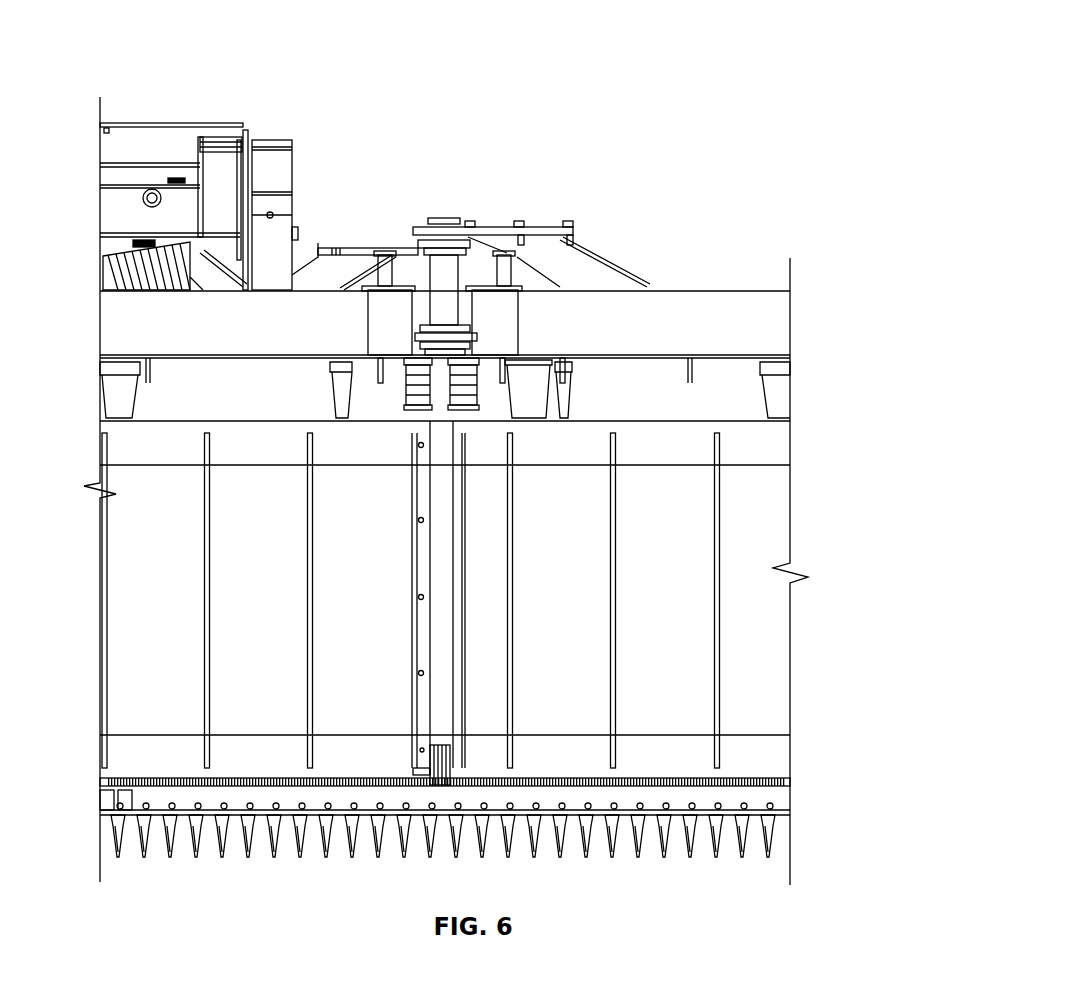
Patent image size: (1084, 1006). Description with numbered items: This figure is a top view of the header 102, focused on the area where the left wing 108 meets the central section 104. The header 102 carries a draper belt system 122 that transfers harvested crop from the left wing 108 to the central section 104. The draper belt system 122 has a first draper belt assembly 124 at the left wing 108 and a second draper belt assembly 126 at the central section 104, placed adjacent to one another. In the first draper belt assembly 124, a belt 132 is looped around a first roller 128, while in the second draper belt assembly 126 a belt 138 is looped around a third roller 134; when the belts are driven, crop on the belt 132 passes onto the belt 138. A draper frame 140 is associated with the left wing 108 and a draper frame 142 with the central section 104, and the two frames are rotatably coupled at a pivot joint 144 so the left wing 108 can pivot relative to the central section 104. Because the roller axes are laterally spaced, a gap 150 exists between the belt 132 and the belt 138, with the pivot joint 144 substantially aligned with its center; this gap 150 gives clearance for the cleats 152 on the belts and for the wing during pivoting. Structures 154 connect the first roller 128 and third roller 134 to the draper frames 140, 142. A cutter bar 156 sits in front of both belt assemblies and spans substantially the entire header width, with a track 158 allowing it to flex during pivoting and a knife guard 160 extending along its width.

The header 102 is at (665, 35).
The central section 104 is at (150, 105).
The left wing 108 is at (715, 178).
The draper belt system 122 is at (368, 688).
The first draper belt assembly 124 is at (660, 440).
The second draper belt assembly 126 is at (258, 437).
The first roller 128 is at (548, 395).
The belt 132 is at (765, 545).
The third roller 134 is at (374, 380).
The belt 138 is at (143, 612).
The draper frame 140 is at (670, 287).
The draper frame 142 is at (216, 318).
The pivot joint 144 is at (445, 278).
The gap 150 is at (438, 462).
The cleats 152 is at (205, 572).
The structures 154 is at (332, 388).
The cutter bar 156 is at (636, 838).
The track 158 is at (430, 772).
The knife guard 160 is at (770, 800).